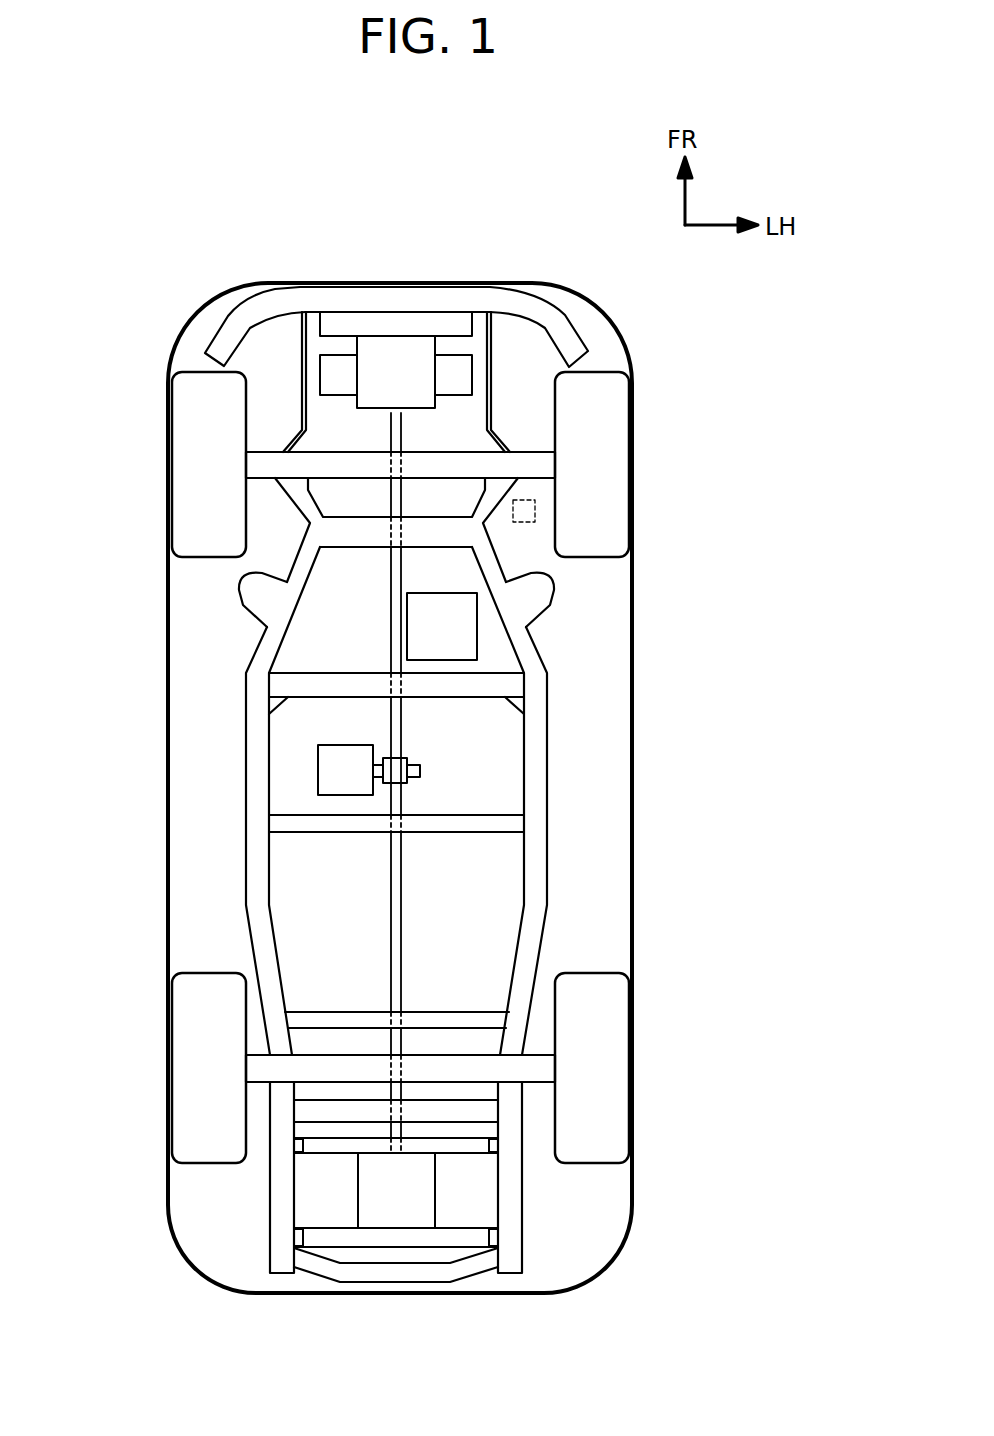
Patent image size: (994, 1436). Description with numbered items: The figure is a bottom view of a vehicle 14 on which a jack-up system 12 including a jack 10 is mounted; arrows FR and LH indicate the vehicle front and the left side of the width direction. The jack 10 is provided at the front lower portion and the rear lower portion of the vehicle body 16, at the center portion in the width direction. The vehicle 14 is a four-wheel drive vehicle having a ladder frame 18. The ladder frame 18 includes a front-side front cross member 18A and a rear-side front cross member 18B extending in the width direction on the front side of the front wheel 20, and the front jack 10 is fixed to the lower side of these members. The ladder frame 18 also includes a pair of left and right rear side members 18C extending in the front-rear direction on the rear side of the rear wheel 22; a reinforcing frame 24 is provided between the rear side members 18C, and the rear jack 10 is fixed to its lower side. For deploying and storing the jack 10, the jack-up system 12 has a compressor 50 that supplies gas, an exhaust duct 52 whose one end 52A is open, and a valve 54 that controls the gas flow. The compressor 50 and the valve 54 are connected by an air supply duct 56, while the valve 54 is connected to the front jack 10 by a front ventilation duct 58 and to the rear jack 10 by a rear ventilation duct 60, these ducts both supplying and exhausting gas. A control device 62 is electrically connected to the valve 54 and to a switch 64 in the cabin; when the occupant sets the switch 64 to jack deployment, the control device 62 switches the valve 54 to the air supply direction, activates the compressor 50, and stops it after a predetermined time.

The jack 10 is at (437, 373).
The jack-up system 12 is at (446, 211).
The vehicle 14 is at (432, 160).
The vehicle body 16 is at (633, 598).
The ladder frame 18 is at (548, 708).
The front-side front cross member 18A is at (340, 328).
The rear-side front cross member 18B is at (330, 375).
The rear side member 18C is at (270, 1213).
The front wheel 20 is at (603, 370).
The rear wheel 22 is at (608, 975).
The reinforcing frame 24 is at (425, 1247).
The compressor 50 is at (318, 770).
The exhaust duct 52 is at (410, 762).
The one end of exhaust duct 52A is at (420, 770).
The valve 54 is at (383, 768).
The air supply duct 56 is at (378, 758).
The front ventilation duct 58 is at (390, 645).
The rear ventilation duct 60 is at (390, 887).
The control device 62 is at (478, 642).
The switch 64 is at (536, 511).